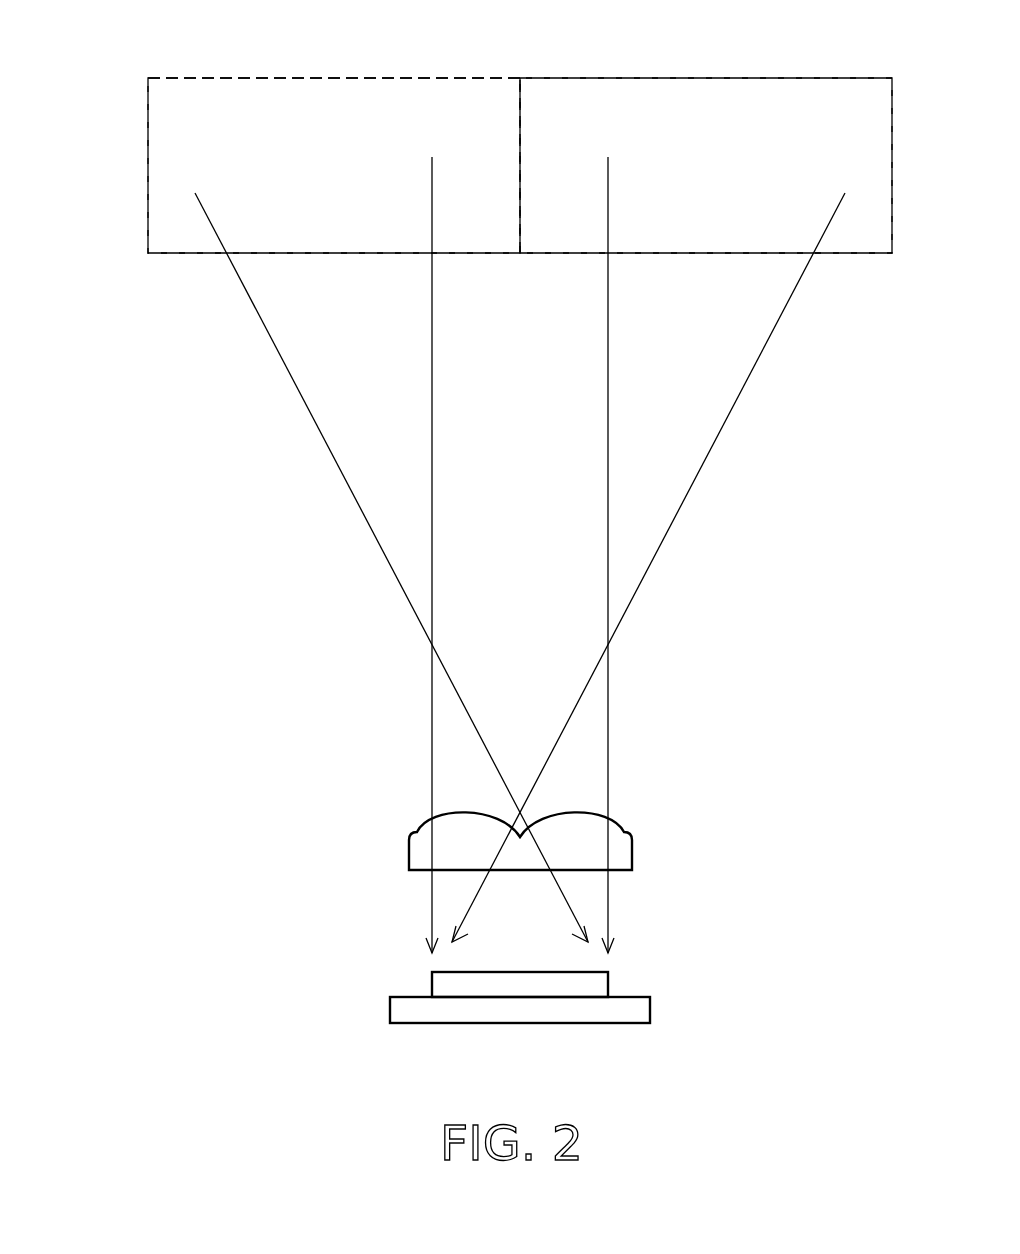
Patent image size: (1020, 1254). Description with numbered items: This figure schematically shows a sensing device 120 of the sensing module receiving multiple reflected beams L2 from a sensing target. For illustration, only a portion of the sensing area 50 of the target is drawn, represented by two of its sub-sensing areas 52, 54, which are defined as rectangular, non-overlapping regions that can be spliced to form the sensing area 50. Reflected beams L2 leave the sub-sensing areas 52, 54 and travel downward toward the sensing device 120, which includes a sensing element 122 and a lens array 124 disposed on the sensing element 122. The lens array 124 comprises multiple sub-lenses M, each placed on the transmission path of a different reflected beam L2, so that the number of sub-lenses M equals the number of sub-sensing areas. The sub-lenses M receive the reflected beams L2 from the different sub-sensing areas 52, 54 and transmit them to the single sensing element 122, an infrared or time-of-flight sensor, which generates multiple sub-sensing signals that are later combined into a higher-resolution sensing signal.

The sensing area 50 is at (136, 106).
The sub-sensing area 52 is at (250, 90).
The sub-sensing area 54 is at (790, 90).
The reflected beam L2 is at (432, 488).
The sensing device 120 is at (767, 845).
The sensing element 122 is at (592, 983).
The lens array 124 is at (545, 835).
The sub-lens M is at (420, 828).